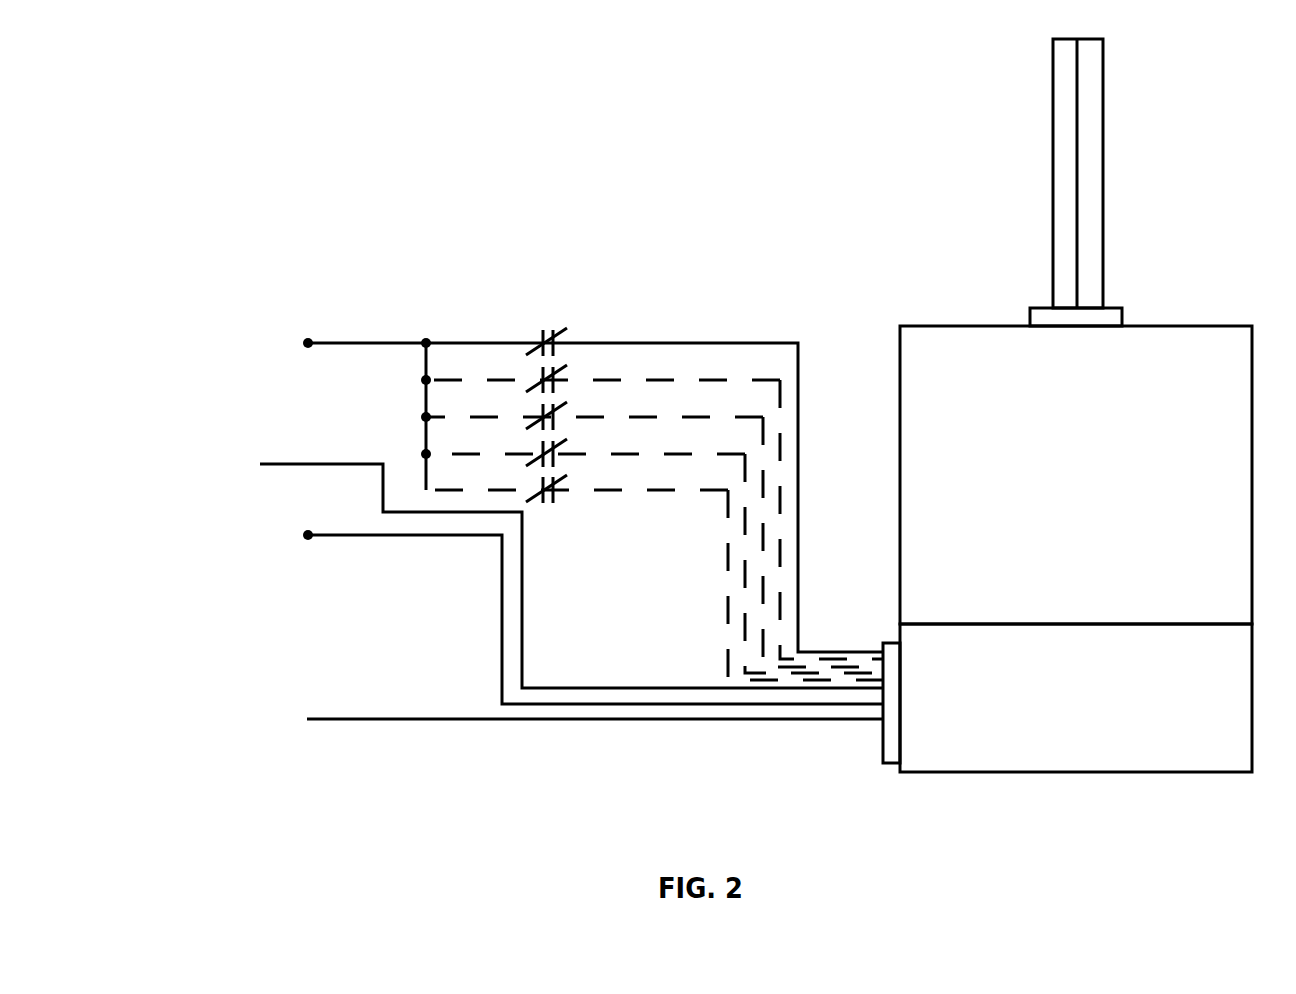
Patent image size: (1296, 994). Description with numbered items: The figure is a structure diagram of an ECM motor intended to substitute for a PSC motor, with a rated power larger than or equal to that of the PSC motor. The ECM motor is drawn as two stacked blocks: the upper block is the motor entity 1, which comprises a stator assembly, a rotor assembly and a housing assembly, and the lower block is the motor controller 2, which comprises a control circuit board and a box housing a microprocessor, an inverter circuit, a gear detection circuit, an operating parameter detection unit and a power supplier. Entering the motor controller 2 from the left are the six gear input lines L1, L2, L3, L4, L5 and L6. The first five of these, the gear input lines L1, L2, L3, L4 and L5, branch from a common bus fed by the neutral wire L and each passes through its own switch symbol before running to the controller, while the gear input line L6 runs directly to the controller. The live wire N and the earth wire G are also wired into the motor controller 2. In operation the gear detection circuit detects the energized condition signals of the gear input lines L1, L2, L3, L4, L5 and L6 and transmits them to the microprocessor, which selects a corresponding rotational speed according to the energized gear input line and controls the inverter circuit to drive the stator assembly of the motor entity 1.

The motor entity 1 is at (1179, 350).
The motor controller 2 is at (1163, 755).
The neutral wire L is at (281, 408).
The live wire N is at (523, 612).
The earth wire G is at (515, 720).
The gear input line L1 is at (654, 483).
The gear input line L2 is at (654, 505).
The gear input line L3 is at (654, 527).
The gear input line L4 is at (654, 549).
The gear input line L5 is at (654, 571).
The gear input line L6 is at (571, 558).